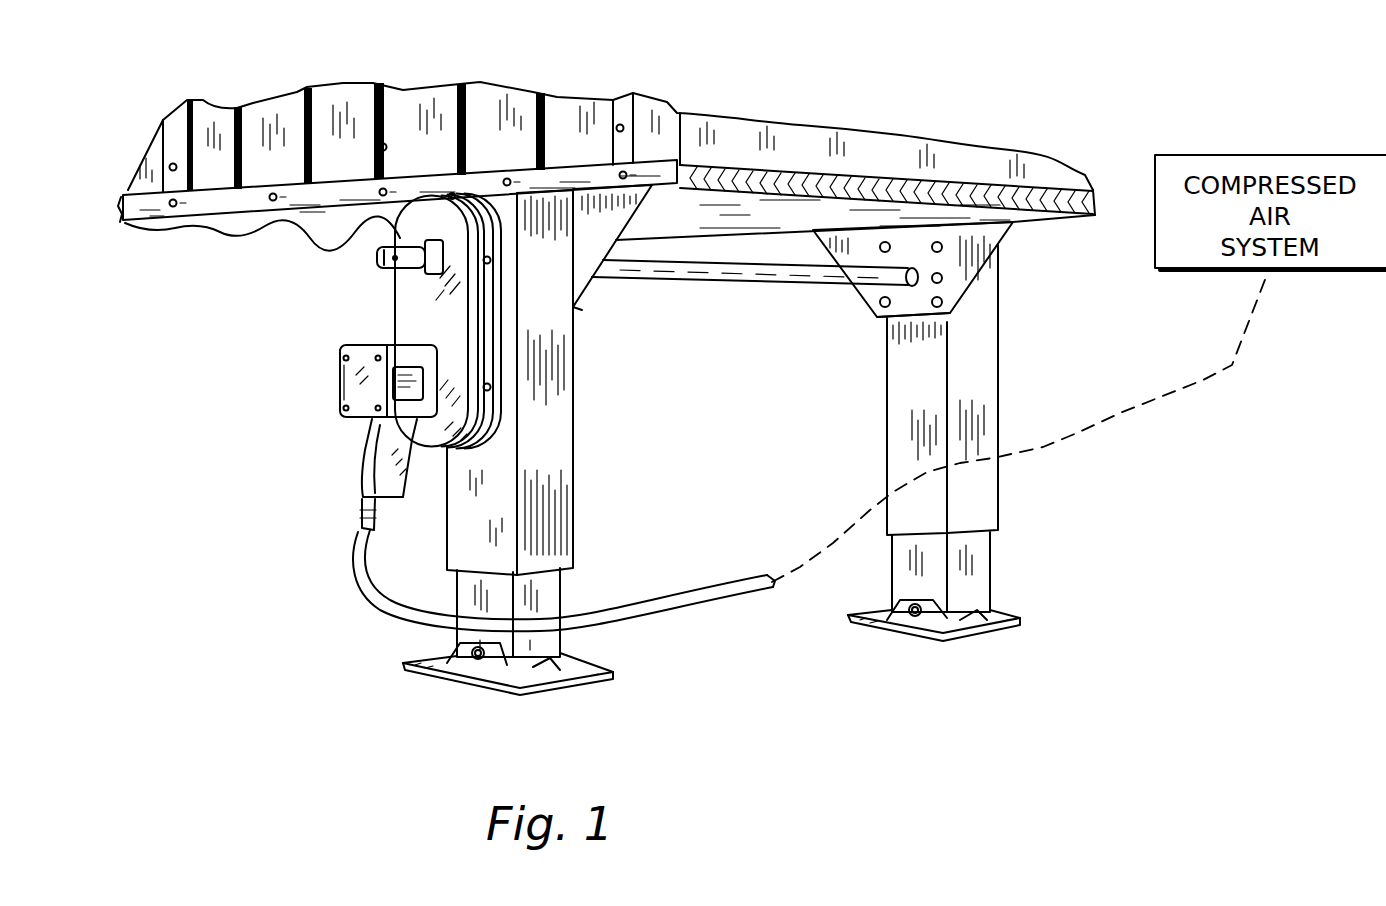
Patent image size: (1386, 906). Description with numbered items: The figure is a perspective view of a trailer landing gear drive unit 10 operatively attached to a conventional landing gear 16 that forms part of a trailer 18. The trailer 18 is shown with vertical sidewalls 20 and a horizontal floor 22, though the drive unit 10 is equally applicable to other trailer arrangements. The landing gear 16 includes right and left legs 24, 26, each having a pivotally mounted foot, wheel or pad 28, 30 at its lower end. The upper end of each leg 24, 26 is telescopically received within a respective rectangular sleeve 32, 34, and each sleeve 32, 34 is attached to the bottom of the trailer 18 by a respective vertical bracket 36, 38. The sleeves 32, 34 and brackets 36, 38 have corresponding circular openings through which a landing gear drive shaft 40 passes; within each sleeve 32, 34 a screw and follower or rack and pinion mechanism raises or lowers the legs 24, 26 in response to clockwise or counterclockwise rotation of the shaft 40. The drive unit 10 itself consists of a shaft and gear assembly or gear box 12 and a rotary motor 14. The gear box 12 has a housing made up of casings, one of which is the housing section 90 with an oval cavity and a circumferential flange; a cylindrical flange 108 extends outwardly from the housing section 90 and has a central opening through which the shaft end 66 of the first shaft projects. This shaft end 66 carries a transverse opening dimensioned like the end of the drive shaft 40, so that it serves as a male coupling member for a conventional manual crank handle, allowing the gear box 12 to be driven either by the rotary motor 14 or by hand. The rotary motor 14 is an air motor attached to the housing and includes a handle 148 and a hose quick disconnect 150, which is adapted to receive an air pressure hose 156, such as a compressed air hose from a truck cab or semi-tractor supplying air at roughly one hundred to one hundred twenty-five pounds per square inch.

The drive unit 10 is at (340, 352).
The shaft and gear assembly 12 is at (433, 324).
The rotary motor 14 is at (367, 397).
The landing gear 16 is at (1000, 327).
The trailer 18 is at (213, 218).
The vertical sidewalls 20 is at (553, 103).
The horizontal floor 22 is at (887, 177).
The right leg 24 is at (553, 643).
The left leg 26 is at (973, 597).
The foot 28 is at (567, 687).
The foot 30 is at (967, 637).
The rectangular sleeve 32 is at (560, 447).
The rectangular sleeve 34 is at (987, 393).
The vertical bracket 36 is at (583, 272).
The vertical bracket 38 is at (997, 232).
The landing gear drive shaft 40 is at (767, 272).
The second end of first shaft 66 is at (376, 256).
The housing section 90 is at (433, 207).
The cylindrical flange 108 is at (437, 250).
The handle 148 is at (367, 463).
The hose quick disconnect 150 is at (363, 507).
The air pressure hose 156 is at (390, 598).